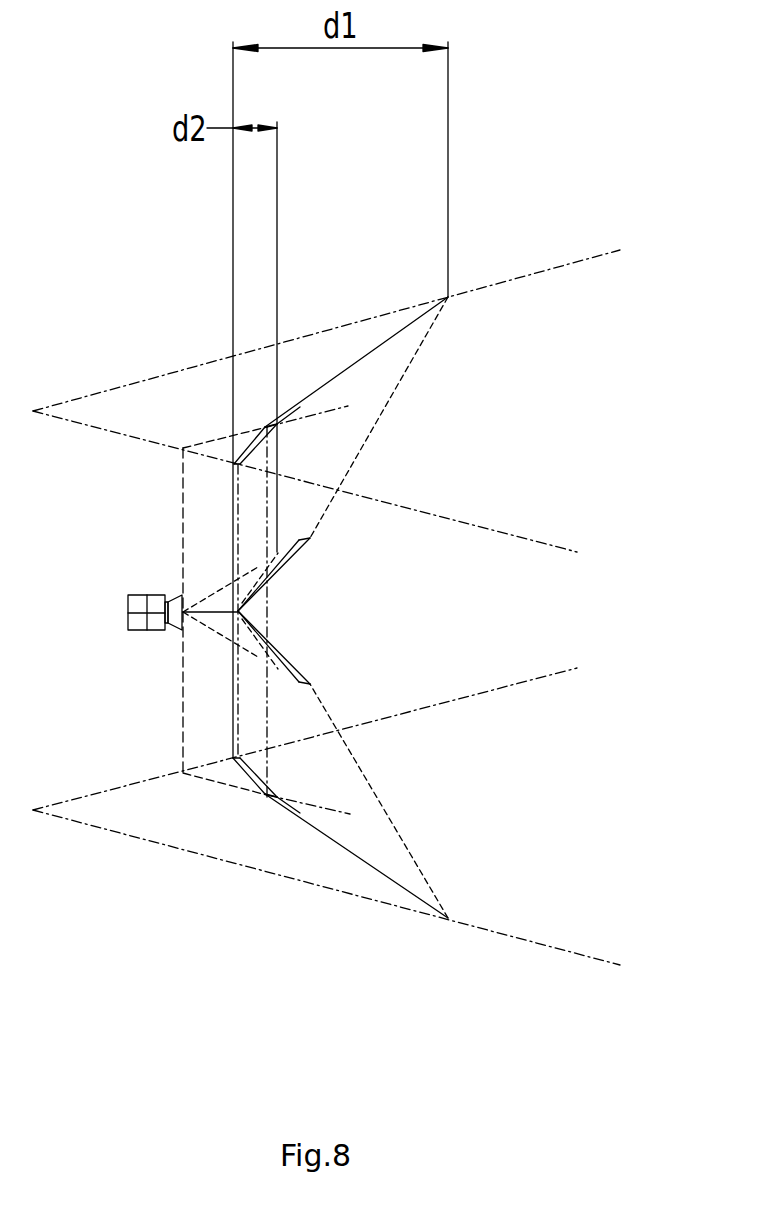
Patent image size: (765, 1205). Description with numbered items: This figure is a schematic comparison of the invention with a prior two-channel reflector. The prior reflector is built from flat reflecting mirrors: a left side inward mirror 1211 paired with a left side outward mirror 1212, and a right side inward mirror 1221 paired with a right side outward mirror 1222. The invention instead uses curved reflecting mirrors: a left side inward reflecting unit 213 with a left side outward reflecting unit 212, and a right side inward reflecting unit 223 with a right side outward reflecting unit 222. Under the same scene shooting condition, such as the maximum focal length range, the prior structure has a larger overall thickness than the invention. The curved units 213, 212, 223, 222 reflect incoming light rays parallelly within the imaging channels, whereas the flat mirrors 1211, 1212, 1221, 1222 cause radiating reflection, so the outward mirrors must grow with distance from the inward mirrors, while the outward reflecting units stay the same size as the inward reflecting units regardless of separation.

The left side outward mirror 1212 is at (356, 353).
The left side inward mirror 1211 is at (379, 578).
The right side inward mirror 1221 is at (360, 650).
The right side outward mirror 1222 is at (340, 867).
The left side outward reflecting unit 212 is at (162, 404).
The left side inward reflecting unit 213 is at (173, 519).
The right side inward reflecting unit 223 is at (162, 703).
The right side outward reflecting unit 222 is at (180, 829).